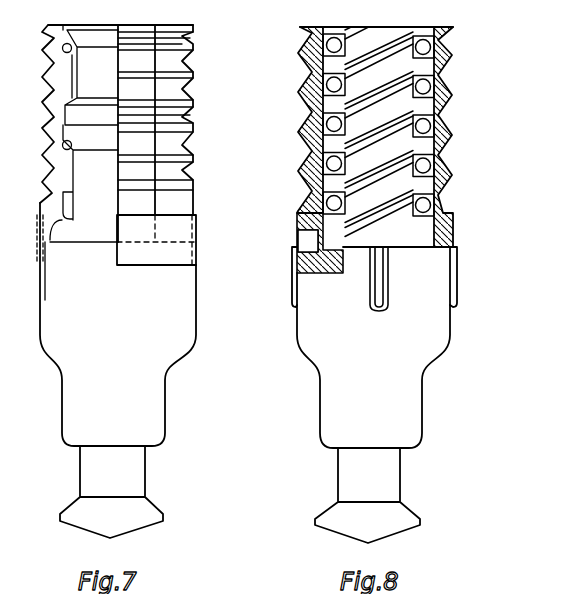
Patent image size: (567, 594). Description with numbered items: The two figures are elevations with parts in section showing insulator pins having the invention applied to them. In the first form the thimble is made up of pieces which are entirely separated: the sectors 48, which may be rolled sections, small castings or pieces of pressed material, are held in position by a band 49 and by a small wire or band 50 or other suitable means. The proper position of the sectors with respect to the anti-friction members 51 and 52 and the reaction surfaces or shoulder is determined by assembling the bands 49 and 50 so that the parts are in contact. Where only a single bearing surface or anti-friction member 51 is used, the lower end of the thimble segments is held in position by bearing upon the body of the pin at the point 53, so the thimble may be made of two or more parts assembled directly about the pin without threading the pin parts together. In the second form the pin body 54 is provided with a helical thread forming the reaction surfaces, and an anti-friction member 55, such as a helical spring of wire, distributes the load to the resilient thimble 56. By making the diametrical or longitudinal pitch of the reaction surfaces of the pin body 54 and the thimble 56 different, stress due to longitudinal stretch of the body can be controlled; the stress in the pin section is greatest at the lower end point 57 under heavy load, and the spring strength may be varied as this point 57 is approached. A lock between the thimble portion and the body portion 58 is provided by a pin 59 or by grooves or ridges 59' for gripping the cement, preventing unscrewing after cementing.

In FIG. 7, the sectors 48 is at (173, 93).
In FIG. 7, the band 49 is at (199, 243).
In FIG. 7, the small wire or band 50 is at (187, 80).
In FIG. 7, the anti-friction member 51 is at (63, 50).
In FIG. 7, the anti-friction member 52 is at (63, 150).
In FIG. 7, the point 53 is at (45, 288).
In FIG. 8, the pin body 54 is at (418, 72).
In FIG. 8, the anti-friction member 55 is at (443, 143).
In FIG. 8, the resilient thimble 56 is at (427, 167).
In FIG. 8, the point 57 is at (380, 228).
In FIG. 8, the body portion 58 is at (313, 313).
In FIG. 8, the pin 59 is at (280, 268).
In FIG. 8, the grooves or ridges 59' is at (480, 272).